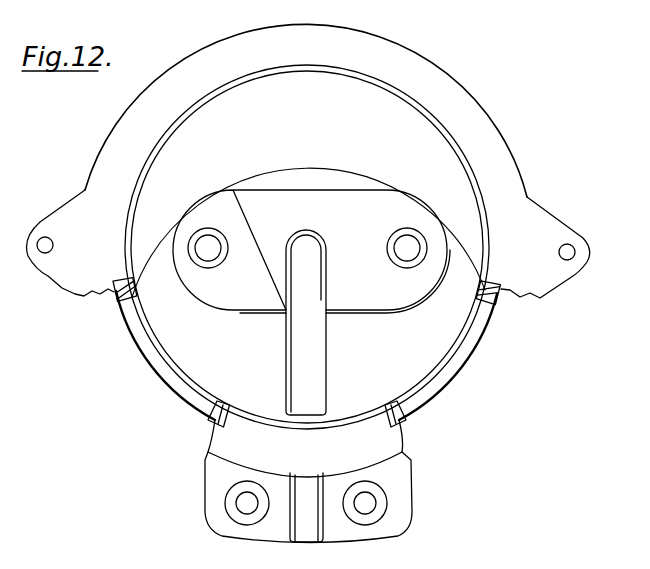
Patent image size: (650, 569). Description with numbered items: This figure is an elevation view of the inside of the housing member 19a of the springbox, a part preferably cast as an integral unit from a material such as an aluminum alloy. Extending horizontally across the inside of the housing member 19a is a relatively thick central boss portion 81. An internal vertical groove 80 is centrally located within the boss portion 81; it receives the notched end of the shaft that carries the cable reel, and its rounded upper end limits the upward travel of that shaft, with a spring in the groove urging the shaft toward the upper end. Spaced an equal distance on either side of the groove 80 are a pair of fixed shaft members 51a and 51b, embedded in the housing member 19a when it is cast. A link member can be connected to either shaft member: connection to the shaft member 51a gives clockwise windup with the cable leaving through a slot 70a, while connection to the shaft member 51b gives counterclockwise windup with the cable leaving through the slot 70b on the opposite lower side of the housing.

The housing member 19a is at (562, 111).
The slot 70a is at (121, 299).
The slot 70b is at (494, 308).
The central boss portion 81 is at (340, 190).
The fixed shaft member 51a is at (398, 233).
The fixed shaft member 51b is at (266, 224).
The groove 80 is at (290, 340).